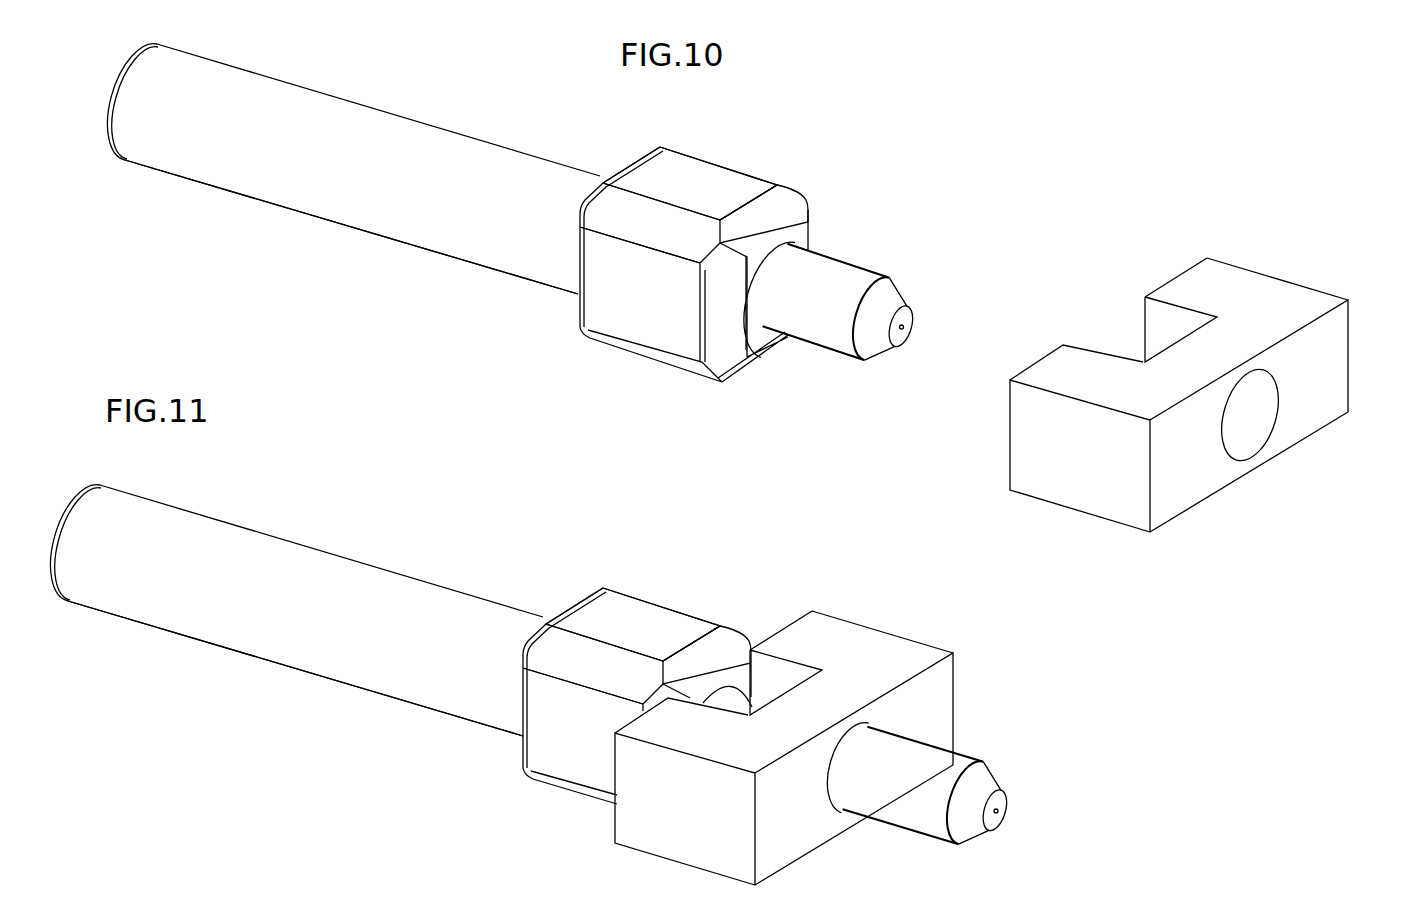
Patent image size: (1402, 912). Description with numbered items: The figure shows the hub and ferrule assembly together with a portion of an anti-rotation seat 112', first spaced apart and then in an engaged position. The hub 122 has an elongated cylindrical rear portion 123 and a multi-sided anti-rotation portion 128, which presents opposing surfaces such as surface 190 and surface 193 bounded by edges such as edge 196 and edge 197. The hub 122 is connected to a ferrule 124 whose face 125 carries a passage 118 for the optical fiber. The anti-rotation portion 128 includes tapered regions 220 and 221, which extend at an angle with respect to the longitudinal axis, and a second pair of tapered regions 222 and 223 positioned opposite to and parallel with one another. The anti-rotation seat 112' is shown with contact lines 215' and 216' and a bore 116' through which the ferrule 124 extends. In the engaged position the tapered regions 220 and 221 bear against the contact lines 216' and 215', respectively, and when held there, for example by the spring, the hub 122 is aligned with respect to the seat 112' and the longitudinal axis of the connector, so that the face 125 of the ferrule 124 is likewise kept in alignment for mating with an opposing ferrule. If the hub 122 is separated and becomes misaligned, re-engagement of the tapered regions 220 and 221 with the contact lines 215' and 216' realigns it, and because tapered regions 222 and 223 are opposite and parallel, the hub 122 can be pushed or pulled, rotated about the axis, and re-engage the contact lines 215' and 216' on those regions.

In FIG. 10, the hub 122 is at (387, 86).
In FIG. 11, the hub 122 is at (332, 526).
In FIG. 10, the elongated cylindrical rear portion 123 is at (347, 204).
In FIG. 11, the elongated cylindrical rear portion 123 is at (292, 647).
In FIG. 10, the opposing surface 190 is at (682, 160).
In FIG. 11, the opposing surface 190 is at (633, 601).
In FIG. 10, the anti-rotation portion 128 is at (722, 172).
In FIG. 11, the anti-rotation portion 128 is at (661, 609).
In FIG. 10, the edge 196 is at (620, 200).
In FIG. 11, the edge 196 is at (593, 636).
In FIG. 10, the tapered region 222 is at (775, 205).
In FIG. 11, the tapered region 222 is at (727, 642).
In FIG. 10, the tapered region 221 is at (812, 232).
In FIG. 10, the opposing surface 193 is at (596, 320).
In FIG. 11, the opposing surface 193 is at (571, 745).
In FIG. 10, the edge 197 is at (652, 355).
In FIG. 11, the edge 197 is at (570, 808).
In FIG. 10, the tapered region 220 is at (720, 347).
In FIG. 11, the tapered region 220 is at (688, 730).
In FIG. 10, the tapered region 223 is at (755, 360).
In FIG. 10, the ferrule 124 is at (848, 290).
In FIG. 11, the ferrule 124 is at (935, 775).
In FIG. 10, the face 125 is at (915, 312).
In FIG. 11, the face 125 is at (1007, 798).
In FIG. 11, the passage 118 is at (1003, 812).
In FIG. 10, the anti-rotation seat 112' is at (1179, 378).
In FIG. 11, the anti-rotation seat 112' is at (784, 731).
In FIG. 10, the contact line 215' is at (1141, 314).
In FIG. 11, the contact line 215' is at (786, 682).
In FIG. 10, the contact line 216' is at (1076, 337).
In FIG. 11, the contact line 216' is at (681, 715).
In FIG. 10, the bore 116' is at (1292, 416).
In FIG. 11, the bore 116' is at (850, 799).